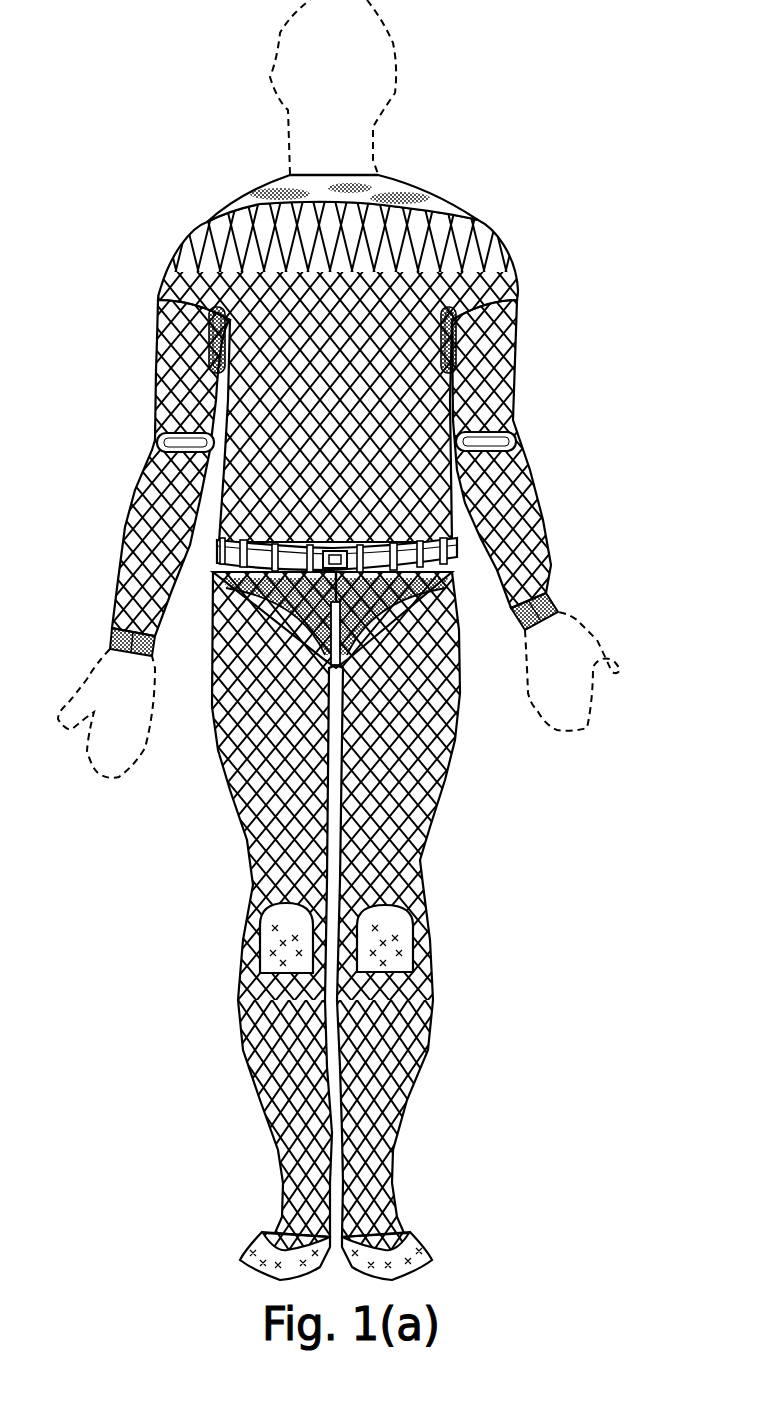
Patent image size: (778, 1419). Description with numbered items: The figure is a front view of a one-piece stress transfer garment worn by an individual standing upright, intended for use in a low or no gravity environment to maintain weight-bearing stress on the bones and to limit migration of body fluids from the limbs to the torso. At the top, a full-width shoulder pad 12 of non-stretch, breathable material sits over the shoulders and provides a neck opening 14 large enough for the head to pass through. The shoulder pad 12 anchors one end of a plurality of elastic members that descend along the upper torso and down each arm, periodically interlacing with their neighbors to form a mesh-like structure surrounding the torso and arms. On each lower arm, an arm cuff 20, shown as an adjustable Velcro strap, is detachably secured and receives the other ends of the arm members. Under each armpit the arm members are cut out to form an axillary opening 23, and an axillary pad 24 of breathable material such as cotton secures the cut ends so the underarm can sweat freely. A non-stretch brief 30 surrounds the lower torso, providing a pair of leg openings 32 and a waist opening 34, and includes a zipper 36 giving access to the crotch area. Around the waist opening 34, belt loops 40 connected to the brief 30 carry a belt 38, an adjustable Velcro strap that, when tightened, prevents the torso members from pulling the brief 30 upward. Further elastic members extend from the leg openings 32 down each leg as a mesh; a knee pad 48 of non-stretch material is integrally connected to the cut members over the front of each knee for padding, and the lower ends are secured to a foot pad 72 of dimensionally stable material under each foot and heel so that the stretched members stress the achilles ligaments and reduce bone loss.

The shoulder pad 12 is at (418, 192).
The neck opening 14 is at (357, 175).
The arm cuff 20 is at (110, 635).
The axillary opening 23 is at (216, 310).
The axillary pad 24 is at (210, 338).
The brief 30 is at (414, 582).
The leg openings 32 is at (211, 627).
The waist opening 34 is at (286, 532).
The zipper 36 is at (330, 632).
The belt 38 is at (345, 530).
The belt loops 40 is at (458, 552).
The knee pads 48 is at (282, 921).
The foot pad 72 is at (243, 1256).